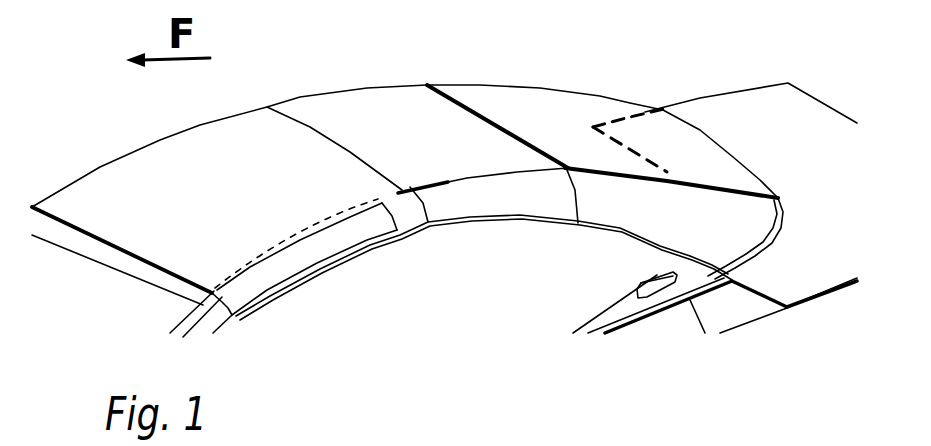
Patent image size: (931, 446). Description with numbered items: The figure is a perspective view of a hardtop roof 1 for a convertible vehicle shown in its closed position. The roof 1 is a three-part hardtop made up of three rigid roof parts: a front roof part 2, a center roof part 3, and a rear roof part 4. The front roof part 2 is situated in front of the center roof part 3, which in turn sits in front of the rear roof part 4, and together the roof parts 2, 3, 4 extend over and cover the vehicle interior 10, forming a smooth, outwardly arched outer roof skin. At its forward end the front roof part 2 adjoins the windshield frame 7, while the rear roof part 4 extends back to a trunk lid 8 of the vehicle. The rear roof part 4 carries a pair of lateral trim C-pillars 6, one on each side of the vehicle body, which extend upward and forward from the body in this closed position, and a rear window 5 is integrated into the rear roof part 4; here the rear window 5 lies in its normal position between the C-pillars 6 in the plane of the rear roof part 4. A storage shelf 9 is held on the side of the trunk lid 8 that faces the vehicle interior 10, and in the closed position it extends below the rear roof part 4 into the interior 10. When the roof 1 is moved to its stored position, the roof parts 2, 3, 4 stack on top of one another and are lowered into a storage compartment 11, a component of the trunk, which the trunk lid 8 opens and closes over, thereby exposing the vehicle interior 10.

The hardtop roof 1 is at (75, 144).
The front roof part 2 is at (163, 160).
The center roof part 3 is at (342, 105).
The rear roof part 4 is at (523, 79).
The rear window 5 is at (562, 102).
The C-pillars 6 is at (622, 217).
The windshield frame 7 is at (225, 316).
The trunk lid 8 is at (753, 98).
The storage shelf 9 is at (618, 115).
The vehicle interior 10 is at (443, 320).
The storage compartment 11 is at (801, 140).